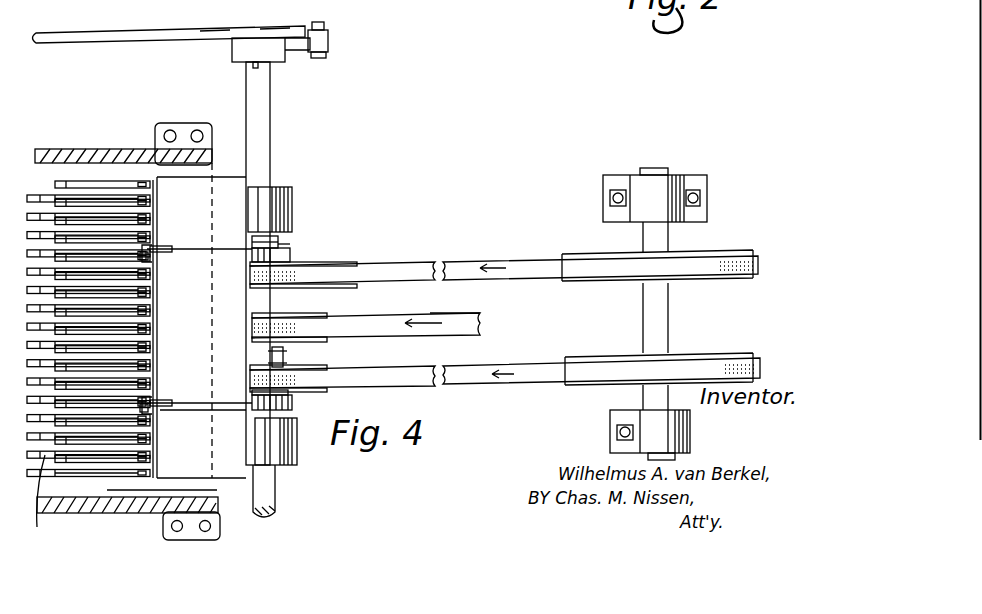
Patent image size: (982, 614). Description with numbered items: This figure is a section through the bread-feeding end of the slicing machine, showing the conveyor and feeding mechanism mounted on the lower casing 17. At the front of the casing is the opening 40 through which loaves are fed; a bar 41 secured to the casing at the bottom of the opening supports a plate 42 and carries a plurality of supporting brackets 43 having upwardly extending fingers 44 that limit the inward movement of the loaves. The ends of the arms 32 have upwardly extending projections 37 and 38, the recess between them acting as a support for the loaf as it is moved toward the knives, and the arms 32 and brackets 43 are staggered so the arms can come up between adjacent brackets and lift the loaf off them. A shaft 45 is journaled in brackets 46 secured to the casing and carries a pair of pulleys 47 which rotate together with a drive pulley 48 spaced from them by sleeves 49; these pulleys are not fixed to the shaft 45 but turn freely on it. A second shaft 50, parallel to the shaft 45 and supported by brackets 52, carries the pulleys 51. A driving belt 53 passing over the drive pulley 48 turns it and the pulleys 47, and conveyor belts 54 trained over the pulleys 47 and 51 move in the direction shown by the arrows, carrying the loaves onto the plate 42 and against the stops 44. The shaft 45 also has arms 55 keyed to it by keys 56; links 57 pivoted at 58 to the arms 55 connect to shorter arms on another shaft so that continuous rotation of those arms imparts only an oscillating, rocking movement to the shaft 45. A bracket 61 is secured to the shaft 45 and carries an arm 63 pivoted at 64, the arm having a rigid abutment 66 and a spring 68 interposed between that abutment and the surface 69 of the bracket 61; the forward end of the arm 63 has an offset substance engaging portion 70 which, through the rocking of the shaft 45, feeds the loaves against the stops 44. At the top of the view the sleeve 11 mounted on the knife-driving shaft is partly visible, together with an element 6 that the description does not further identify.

The sleeve 11 is at (225, 16).
The lever 6 is at (275, 15).
The link 57 is at (200, 33).
The pivot 58 is at (321, 21).
The arm 55 is at (328, 42).
The key 56 is at (262, 65).
The shaft 45 is at (263, 113).
The finger 44 is at (60, 205).
The lower casing 17 is at (110, 157).
The opening 40 is at (210, 160).
The plate 42 is at (240, 188).
The bracket 46 is at (290, 192).
The pivot 64 is at (262, 240).
The bracket 61 is at (287, 250).
The abutment 66 is at (283, 255).
The spring 68 is at (286, 260).
The arm 63 is at (185, 250).
The substance engaging portion 70 is at (149, 259).
The pulley 47 is at (357, 262).
The conveyor belt 54 is at (422, 265).
The drive pulley 48 is at (335, 320).
The sleeve 49 is at (285, 318).
The driving belt 53 is at (460, 317).
The surface 69 is at (282, 404).
The projection 37 is at (147, 473).
The projection 38 is at (60, 460).
The arm 32 is at (38, 505).
The supporting bracket 43 is at (80, 443).
The bar 41 is at (213, 488).
The shaft 50 is at (645, 234).
The bracket 52 is at (613, 183).
The pulley 51 is at (602, 276).